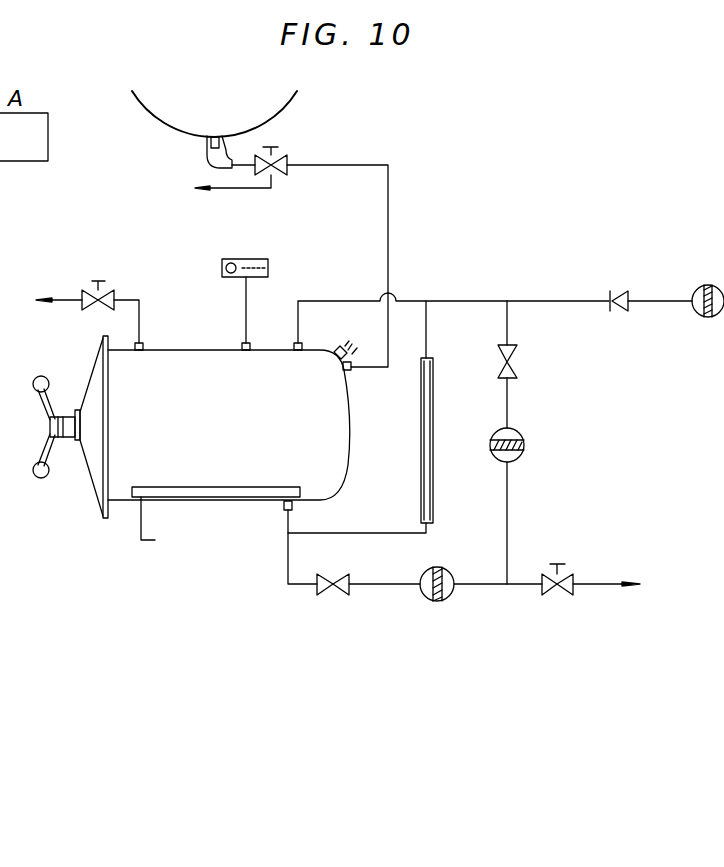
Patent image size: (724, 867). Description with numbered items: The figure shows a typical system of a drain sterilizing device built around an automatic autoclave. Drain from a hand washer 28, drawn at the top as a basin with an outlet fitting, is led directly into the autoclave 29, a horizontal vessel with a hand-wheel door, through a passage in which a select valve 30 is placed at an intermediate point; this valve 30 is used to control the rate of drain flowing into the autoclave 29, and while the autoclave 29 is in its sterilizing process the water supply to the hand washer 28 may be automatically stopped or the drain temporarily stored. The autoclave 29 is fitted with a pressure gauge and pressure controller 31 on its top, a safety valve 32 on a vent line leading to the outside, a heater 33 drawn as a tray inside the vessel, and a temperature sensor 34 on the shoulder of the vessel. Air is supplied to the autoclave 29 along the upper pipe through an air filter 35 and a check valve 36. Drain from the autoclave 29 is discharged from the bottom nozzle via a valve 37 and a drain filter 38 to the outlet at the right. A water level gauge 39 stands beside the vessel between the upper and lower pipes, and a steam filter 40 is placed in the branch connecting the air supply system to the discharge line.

The hand washer 28 is at (268, 104).
The autoclave 29 is at (254, 460).
The select valve 30 is at (280, 151).
The pressure gauge and pressure controller 31 is at (268, 263).
The safety valve 32 is at (106, 287).
The heater 33 is at (186, 492).
The temperature sensor 34 is at (338, 352).
The air filter 35 is at (712, 284).
The check valve 36 is at (617, 290).
The valve 37 is at (333, 596).
The drain filter 38 is at (437, 601).
The water level gauge 39 is at (433, 424).
The steam filter 40 is at (525, 444).